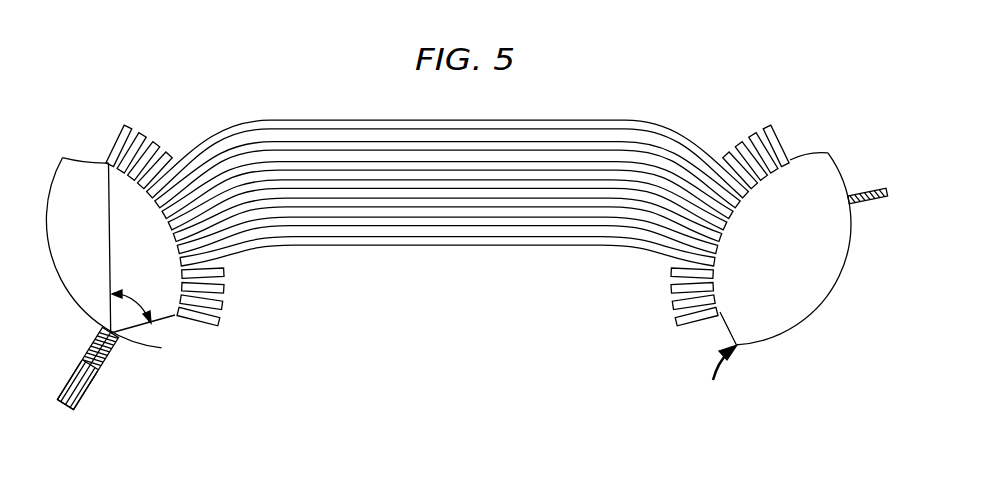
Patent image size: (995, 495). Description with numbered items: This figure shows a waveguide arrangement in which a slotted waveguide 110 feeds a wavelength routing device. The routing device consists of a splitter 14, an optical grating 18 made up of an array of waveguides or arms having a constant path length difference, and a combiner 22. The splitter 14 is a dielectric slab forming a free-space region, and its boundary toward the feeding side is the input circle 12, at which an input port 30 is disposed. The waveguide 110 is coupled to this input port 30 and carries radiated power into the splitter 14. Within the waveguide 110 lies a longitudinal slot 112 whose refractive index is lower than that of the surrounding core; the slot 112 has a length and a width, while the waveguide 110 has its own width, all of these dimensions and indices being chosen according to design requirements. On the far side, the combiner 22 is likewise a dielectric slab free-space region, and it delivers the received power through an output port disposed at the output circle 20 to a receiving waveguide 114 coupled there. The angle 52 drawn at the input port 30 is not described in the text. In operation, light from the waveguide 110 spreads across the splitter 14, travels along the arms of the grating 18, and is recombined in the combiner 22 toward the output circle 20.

The input circle 12 is at (63, 157).
The splitter 14 is at (163, 328).
The optical grating 18 is at (612, 265).
The output circle 20 is at (830, 153).
The combiner 22 is at (817, 160).
The input port 30 is at (88, 352).
The angle 52 is at (131, 301).
The waveguide 110 is at (102, 366).
The longitudinal slot 112 is at (106, 328).
The receiving waveguide 114 is at (874, 192).